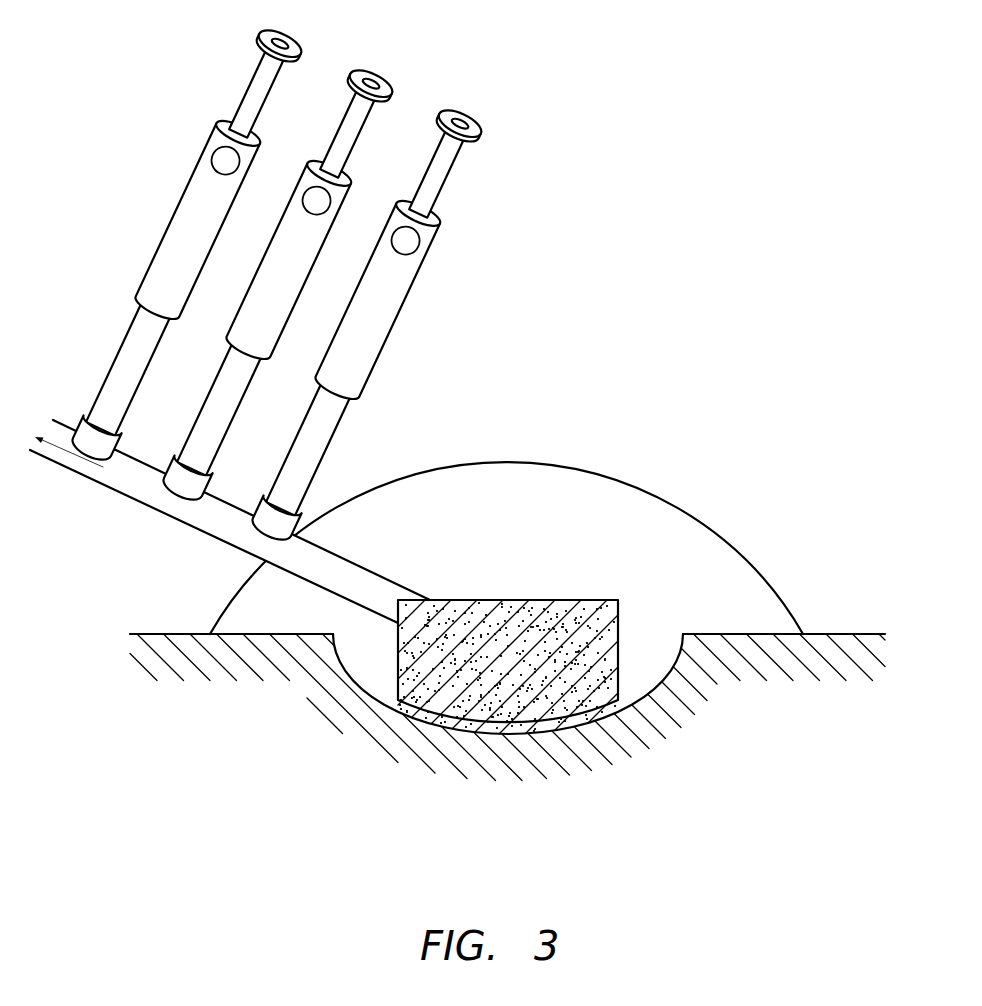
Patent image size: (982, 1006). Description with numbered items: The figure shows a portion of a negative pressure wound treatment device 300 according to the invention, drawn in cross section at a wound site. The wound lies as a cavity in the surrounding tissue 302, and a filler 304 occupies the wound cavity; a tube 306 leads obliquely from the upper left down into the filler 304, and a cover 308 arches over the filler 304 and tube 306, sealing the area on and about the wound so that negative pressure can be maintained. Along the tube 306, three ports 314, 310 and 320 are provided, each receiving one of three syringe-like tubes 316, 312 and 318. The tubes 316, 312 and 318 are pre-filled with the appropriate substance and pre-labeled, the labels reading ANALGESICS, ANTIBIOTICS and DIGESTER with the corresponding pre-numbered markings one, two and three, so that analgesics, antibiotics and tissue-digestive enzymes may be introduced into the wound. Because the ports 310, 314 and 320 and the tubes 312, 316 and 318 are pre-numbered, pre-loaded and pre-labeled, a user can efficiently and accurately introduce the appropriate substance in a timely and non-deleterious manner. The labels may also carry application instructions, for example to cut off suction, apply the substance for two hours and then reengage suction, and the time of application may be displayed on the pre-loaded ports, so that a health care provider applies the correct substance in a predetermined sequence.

The negative pressure wound treatment device 300 is at (600, 832).
The tissue 302 is at (677, 707).
The wound filler 304 is at (620, 622).
The catheter tube 306 is at (358, 563).
The dressing cover 308 is at (675, 503).
The port 310 is at (207, 483).
The tube 312 is at (266, 253).
The port 314 is at (78, 431).
The tube 316 is at (162, 233).
The tube 318 is at (409, 292).
The port 320 is at (297, 532).